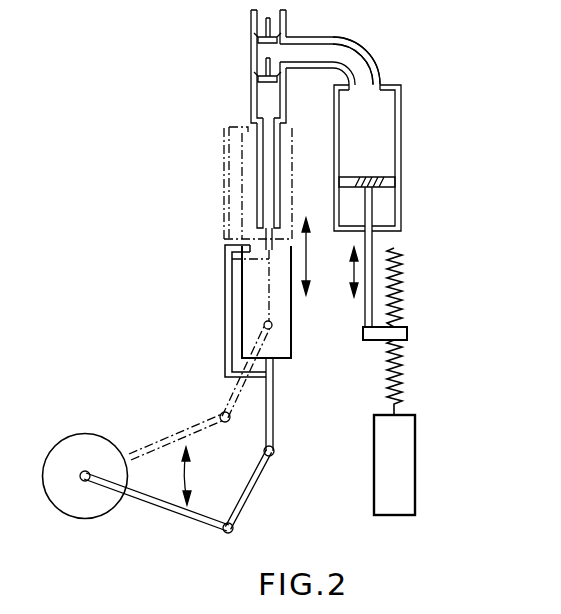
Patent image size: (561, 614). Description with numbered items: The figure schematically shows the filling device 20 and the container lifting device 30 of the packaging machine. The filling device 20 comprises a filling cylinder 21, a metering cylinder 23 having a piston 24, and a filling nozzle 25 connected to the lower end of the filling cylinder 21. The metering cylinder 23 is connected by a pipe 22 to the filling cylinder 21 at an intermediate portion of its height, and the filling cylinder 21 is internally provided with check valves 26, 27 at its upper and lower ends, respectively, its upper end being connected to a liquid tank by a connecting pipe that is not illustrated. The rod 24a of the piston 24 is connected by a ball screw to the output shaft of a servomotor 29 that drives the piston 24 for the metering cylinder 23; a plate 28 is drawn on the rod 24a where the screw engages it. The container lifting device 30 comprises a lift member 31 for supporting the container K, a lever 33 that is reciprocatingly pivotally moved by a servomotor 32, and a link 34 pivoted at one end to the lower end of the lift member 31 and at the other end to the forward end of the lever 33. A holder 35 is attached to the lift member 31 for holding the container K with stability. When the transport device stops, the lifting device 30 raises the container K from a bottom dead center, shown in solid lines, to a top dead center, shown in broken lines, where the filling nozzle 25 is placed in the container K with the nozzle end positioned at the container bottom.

The filling device 20 is at (380, 47).
The filling cylinder 21 is at (251, 99).
The pipe 22 is at (377, 65).
The metering cylinder 23 is at (402, 120).
The piston 24 is at (382, 176).
The rod 24a is at (375, 240).
The filling nozzle 25 is at (257, 193).
The check valve 26 is at (258, 36).
The check valve 27 is at (262, 76).
The plate 28 is at (411, 338).
The servomotor 29 is at (416, 447).
The container lifting device 30 is at (279, 476).
The lift member 31 is at (275, 412).
The servomotor 32 is at (95, 518).
The lever 33 is at (178, 513).
The link 34 is at (247, 507).
The holder 35 is at (224, 327).
The container K is at (291, 340).